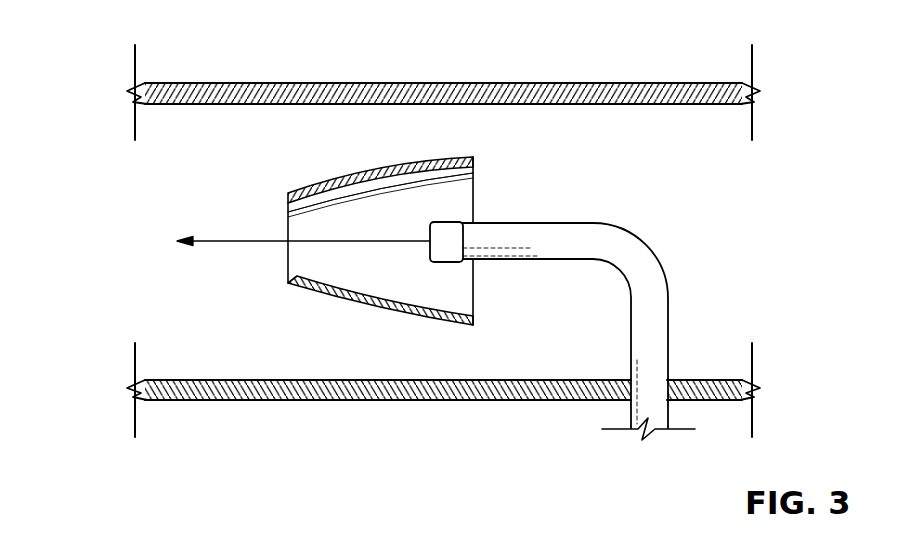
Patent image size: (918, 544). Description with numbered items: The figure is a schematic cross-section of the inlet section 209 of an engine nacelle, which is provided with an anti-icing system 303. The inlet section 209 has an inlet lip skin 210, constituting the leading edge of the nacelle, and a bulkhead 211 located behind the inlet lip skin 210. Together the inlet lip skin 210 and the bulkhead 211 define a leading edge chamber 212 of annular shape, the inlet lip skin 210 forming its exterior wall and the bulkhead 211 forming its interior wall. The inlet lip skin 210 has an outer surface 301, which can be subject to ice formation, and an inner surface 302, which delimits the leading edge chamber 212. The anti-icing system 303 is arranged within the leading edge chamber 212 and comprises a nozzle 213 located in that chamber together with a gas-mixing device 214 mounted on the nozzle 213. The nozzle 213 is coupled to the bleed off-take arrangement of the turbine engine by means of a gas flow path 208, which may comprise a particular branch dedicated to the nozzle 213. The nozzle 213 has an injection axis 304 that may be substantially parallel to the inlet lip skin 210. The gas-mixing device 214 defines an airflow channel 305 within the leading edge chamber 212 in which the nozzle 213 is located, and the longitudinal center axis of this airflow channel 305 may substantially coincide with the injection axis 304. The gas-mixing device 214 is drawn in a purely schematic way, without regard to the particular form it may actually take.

The inlet section 209 is at (118, 62).
The inlet lip skin 210 is at (479, 86).
The outer surface 301 is at (581, 86).
The inner surface 302 is at (627, 105).
The bulkhead 211 is at (401, 390).
The gas-mixing device 214 is at (315, 301).
The airflow channel 305 is at (352, 210).
The injection axis 304 is at (248, 241).
The nozzle 213 is at (452, 230).
The gas flow path 208 is at (631, 355).
The leading edge chamber 212 is at (583, 314).
The anti-icing system 303 is at (710, 212).